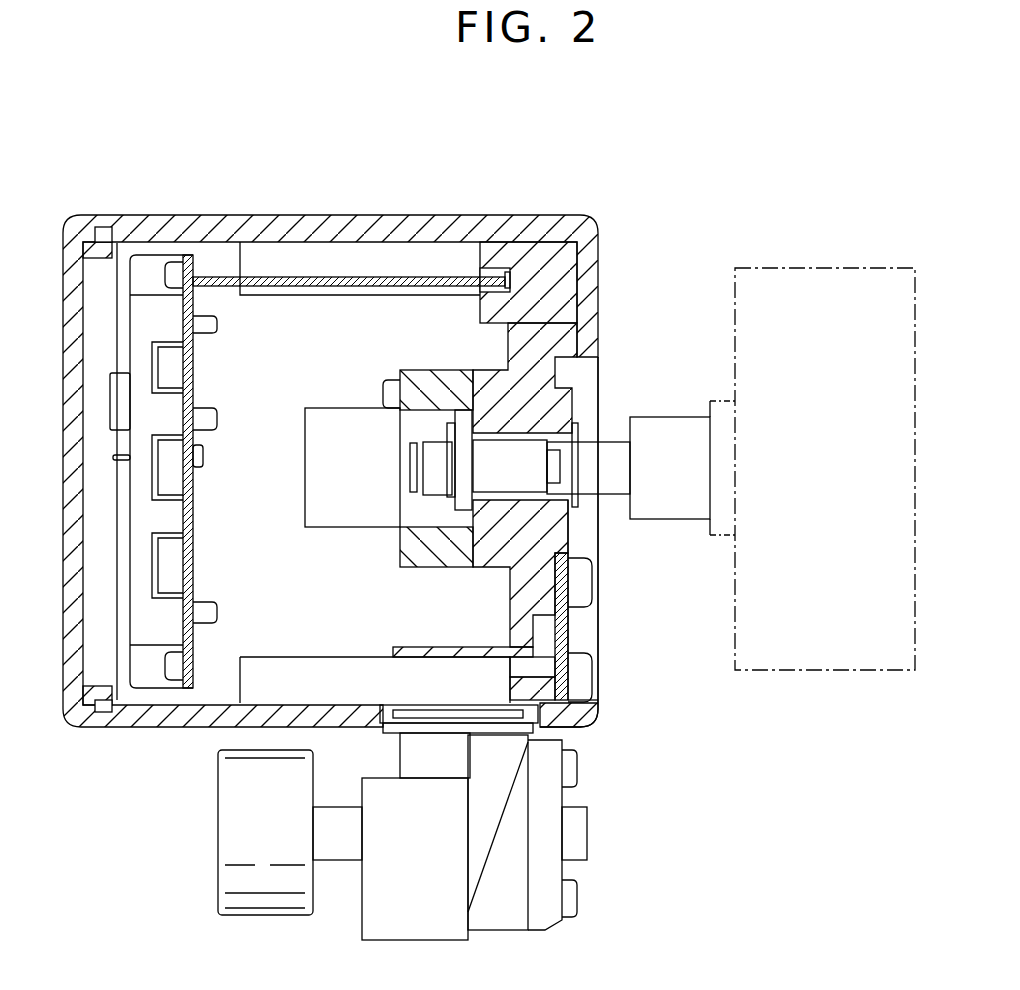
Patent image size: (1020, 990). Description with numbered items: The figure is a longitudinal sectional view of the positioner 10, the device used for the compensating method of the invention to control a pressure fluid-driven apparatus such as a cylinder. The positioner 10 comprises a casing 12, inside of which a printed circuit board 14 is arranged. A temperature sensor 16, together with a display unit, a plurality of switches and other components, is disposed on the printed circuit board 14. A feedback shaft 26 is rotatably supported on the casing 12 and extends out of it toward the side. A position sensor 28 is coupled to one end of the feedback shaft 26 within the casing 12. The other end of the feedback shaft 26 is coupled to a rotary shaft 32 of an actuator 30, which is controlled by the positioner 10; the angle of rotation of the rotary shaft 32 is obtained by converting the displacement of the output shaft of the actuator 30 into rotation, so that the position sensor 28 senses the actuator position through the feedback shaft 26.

The positioner 10 is at (608, 124).
The casing 12 is at (377, 222).
The printed circuit board 14 is at (193, 357).
The temperature sensor 16 is at (203, 455).
The feedback shaft 26 is at (663, 520).
The position sensor 28 is at (350, 520).
The actuator 30 is at (833, 253).
The rotary shaft 32 is at (711, 398).